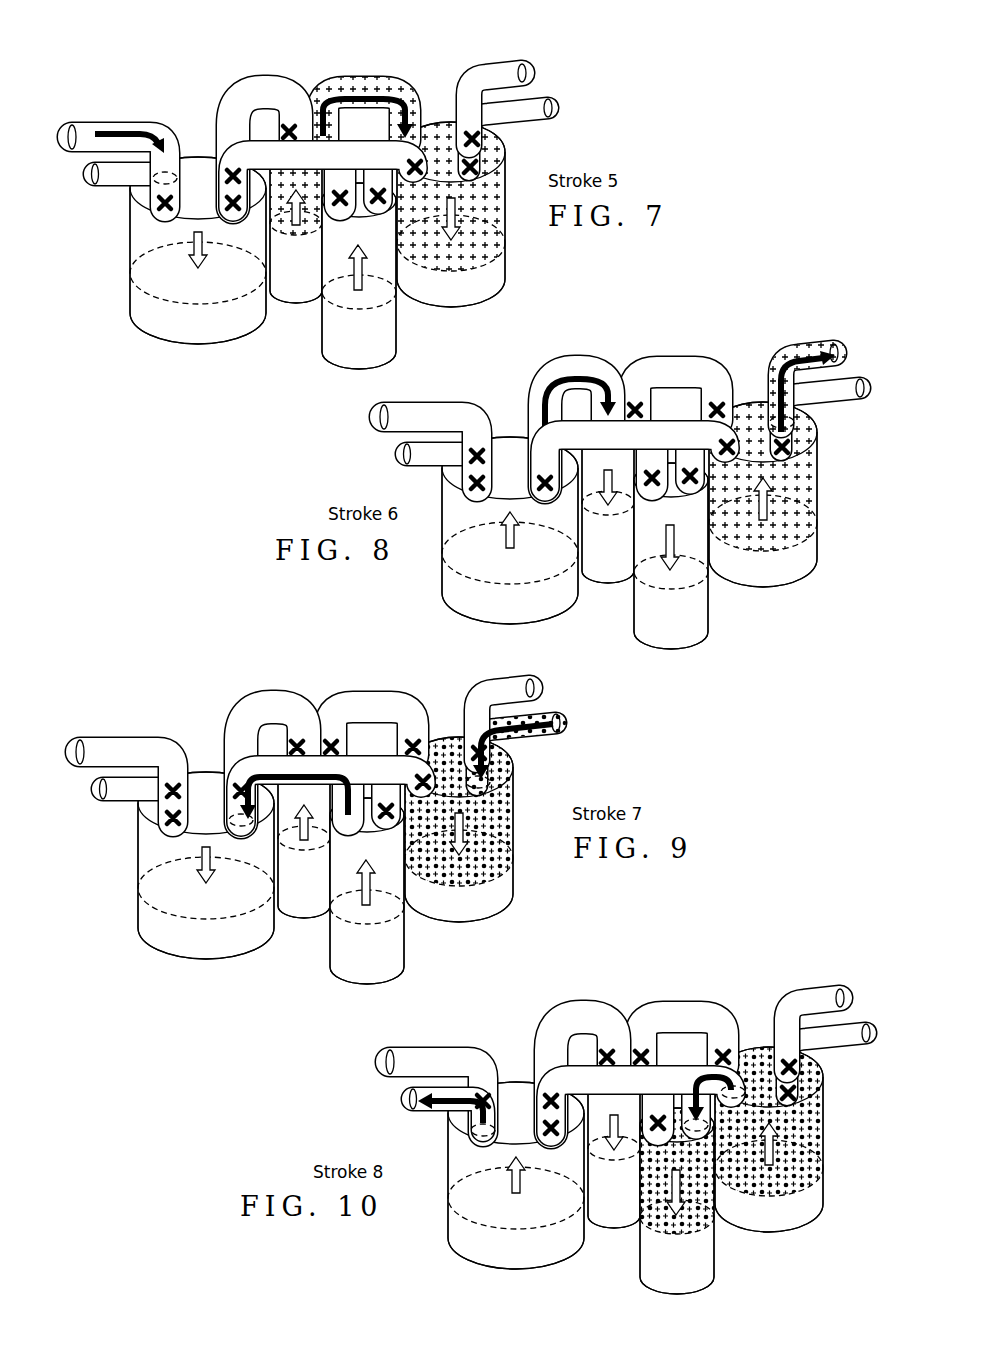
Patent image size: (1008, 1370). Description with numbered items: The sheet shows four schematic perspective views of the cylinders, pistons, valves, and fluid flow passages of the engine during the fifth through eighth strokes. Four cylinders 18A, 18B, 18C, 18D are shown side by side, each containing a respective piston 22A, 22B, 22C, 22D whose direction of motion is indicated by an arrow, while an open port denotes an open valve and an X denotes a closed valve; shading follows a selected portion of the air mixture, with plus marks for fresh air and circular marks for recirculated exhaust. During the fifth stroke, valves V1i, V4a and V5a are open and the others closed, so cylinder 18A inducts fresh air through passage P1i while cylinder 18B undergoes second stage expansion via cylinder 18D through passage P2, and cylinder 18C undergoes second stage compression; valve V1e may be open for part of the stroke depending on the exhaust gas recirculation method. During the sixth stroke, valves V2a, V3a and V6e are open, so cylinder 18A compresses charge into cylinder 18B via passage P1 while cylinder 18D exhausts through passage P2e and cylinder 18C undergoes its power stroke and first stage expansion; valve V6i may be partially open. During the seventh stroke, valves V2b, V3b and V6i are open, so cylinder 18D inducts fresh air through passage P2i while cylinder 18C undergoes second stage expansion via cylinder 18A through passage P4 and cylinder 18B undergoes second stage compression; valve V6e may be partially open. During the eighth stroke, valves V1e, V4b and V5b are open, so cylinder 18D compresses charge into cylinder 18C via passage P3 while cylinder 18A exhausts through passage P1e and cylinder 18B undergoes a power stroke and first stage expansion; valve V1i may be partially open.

In FIG. 7, the cylinder 18A is at (183, 333).
In FIG. 8, the cylinder 18A is at (510, 530).
In FIG. 9, the cylinder 18A is at (170, 873).
In FIG. 10, the cylinder 18A is at (516, 1175).
In FIG. 7, the cylinder 18B is at (283, 287).
In FIG. 8, the cylinder 18B is at (608, 500).
In FIG. 9, the cylinder 18B is at (299, 862).
In FIG. 10, the cylinder 18B is at (614, 1145).
In FIG. 7, the cylinder 18C is at (344, 350).
In FIG. 8, the cylinder 18C is at (671, 556).
In FIG. 9, the cylinder 18C is at (336, 903).
In FIG. 10, the cylinder 18C is at (677, 1201).
In FIG. 7, the cylinder 18D is at (425, 300).
In FIG. 8, the cylinder 18D is at (763, 494).
In FIG. 9, the cylinder 18D is at (504, 829).
In FIG. 10, the cylinder 18D is at (769, 1139).
In FIG. 9, the piston 22A is at (170, 915).
In FIG. 9, the piston 22B is at (299, 898).
In FIG. 9, the piston 22C is at (336, 949).
In FIG. 9, the piston 22D is at (504, 872).
In FIG. 7, the valve V1i is at (100, 148).
In FIG. 10, the valve V1i is at (522, 1054).
In FIG. 7, the valve V1e is at (135, 213).
In FIG. 10, the valve V1e is at (447, 1162).
In FIG. 8, the valve V2a is at (516, 422).
In FIG. 9, the valve V2b is at (173, 841).
In FIG. 8, the valve V3a is at (652, 366).
In FIG. 9, the valve V3b is at (356, 704).
In FIG. 7, the valve V4a is at (308, 100).
In FIG. 10, the valve V4b is at (718, 1197).
In FIG. 7, the valve V5a is at (428, 128).
In FIG. 10, the valve V5b is at (744, 1044).
In FIG. 8, the valve V6e is at (760, 381).
In FIG. 9, the valve V6e is at (457, 715).
In FIG. 8, the valve V6i is at (823, 476).
In FIG. 9, the valve V6i is at (523, 769).
In FIG. 7, the passage P1i is at (147, 128).
In FIG. 10, the passage P1i is at (434, 1050).
In FIG. 10, the passage P1e is at (462, 1062).
In FIG. 8, the passage P1 is at (559, 400).
In FIG. 7, the passage P2 is at (368, 80).
In FIG. 9, the passage P2i is at (544, 720).
In FIG. 8, the passage P2e is at (821, 350).
In FIG. 10, the passage P3 is at (641, 1049).
In FIG. 9, the passage P4 is at (314, 737).